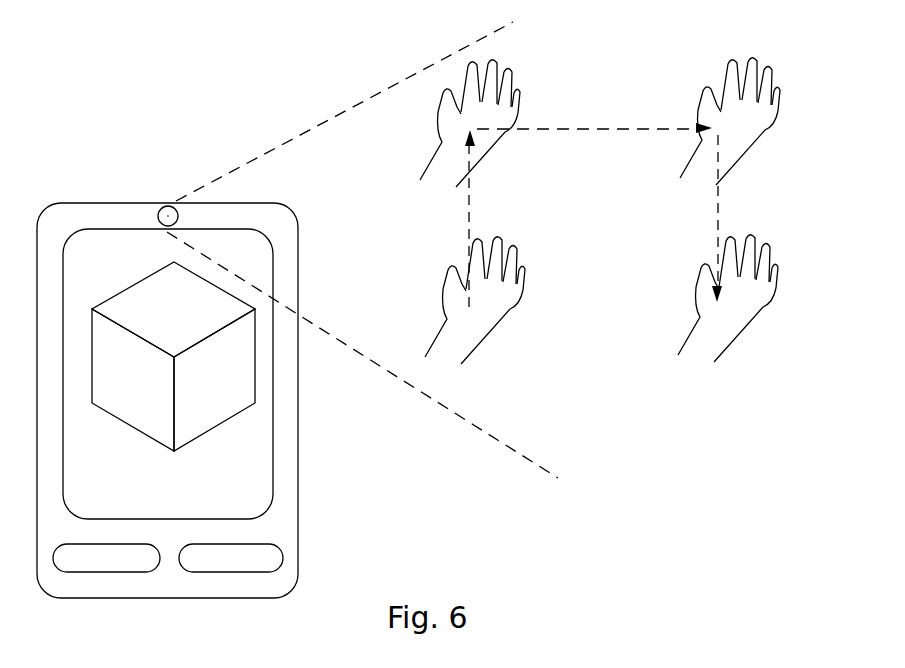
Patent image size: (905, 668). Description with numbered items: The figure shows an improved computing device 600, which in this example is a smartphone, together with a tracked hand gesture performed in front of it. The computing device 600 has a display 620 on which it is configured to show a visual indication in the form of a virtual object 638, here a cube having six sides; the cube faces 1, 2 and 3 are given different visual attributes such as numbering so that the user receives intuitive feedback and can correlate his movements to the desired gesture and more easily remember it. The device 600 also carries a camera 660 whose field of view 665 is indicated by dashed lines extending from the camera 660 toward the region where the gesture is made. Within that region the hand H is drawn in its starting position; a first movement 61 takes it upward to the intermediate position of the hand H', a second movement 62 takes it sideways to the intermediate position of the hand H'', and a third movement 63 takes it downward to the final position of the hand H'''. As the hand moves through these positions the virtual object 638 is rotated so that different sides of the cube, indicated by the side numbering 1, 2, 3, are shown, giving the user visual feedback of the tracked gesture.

The computing device 600 is at (72, 182).
The display 620 is at (273, 500).
The camera 660 is at (170, 204).
The camera field of view 665 is at (312, 128).
The virtual object 638 is at (236, 356).
The cube face 1 is at (173, 309).
The cube face 2 is at (133, 380).
The cube face 3 is at (214, 380).
The movement 61 is at (486, 218).
The movement 62 is at (594, 140).
The movement 63 is at (701, 218).
The hand H is at (475, 327).
The hand H' is at (451, 123).
The hand H'' is at (747, 128).
The hand H''' is at (728, 315).